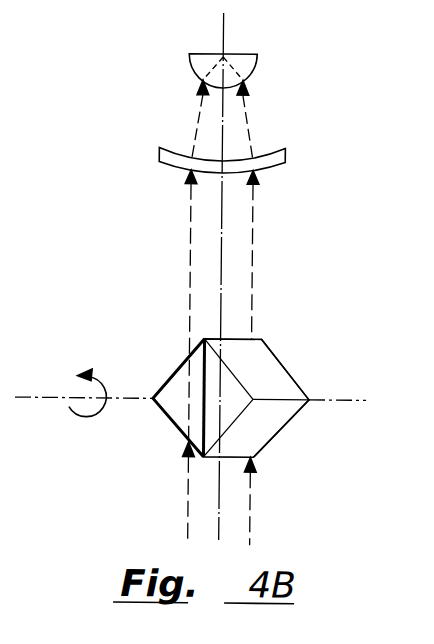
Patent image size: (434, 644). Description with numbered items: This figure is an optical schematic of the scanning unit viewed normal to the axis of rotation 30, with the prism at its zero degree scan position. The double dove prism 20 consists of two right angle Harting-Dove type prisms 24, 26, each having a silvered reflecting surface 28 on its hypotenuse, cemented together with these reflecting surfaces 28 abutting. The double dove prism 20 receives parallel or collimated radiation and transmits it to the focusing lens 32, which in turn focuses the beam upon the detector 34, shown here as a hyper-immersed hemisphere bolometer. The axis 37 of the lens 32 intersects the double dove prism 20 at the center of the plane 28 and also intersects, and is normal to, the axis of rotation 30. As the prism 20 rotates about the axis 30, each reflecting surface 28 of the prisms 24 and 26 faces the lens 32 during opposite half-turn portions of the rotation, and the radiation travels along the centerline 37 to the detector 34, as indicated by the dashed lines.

The double dove prism 20 is at (230, 406).
The right angle Harting-Dove type prism 24 is at (172, 426).
The right angle Harting-Dove type prism 26 is at (302, 381).
The silvered reflecting surface 28 is at (206, 382).
The axis of rotation 30 is at (26, 397).
The focusing lens 32 is at (261, 151).
The detector 34 is at (187, 53).
The axis of the lens 37 is at (221, 32).